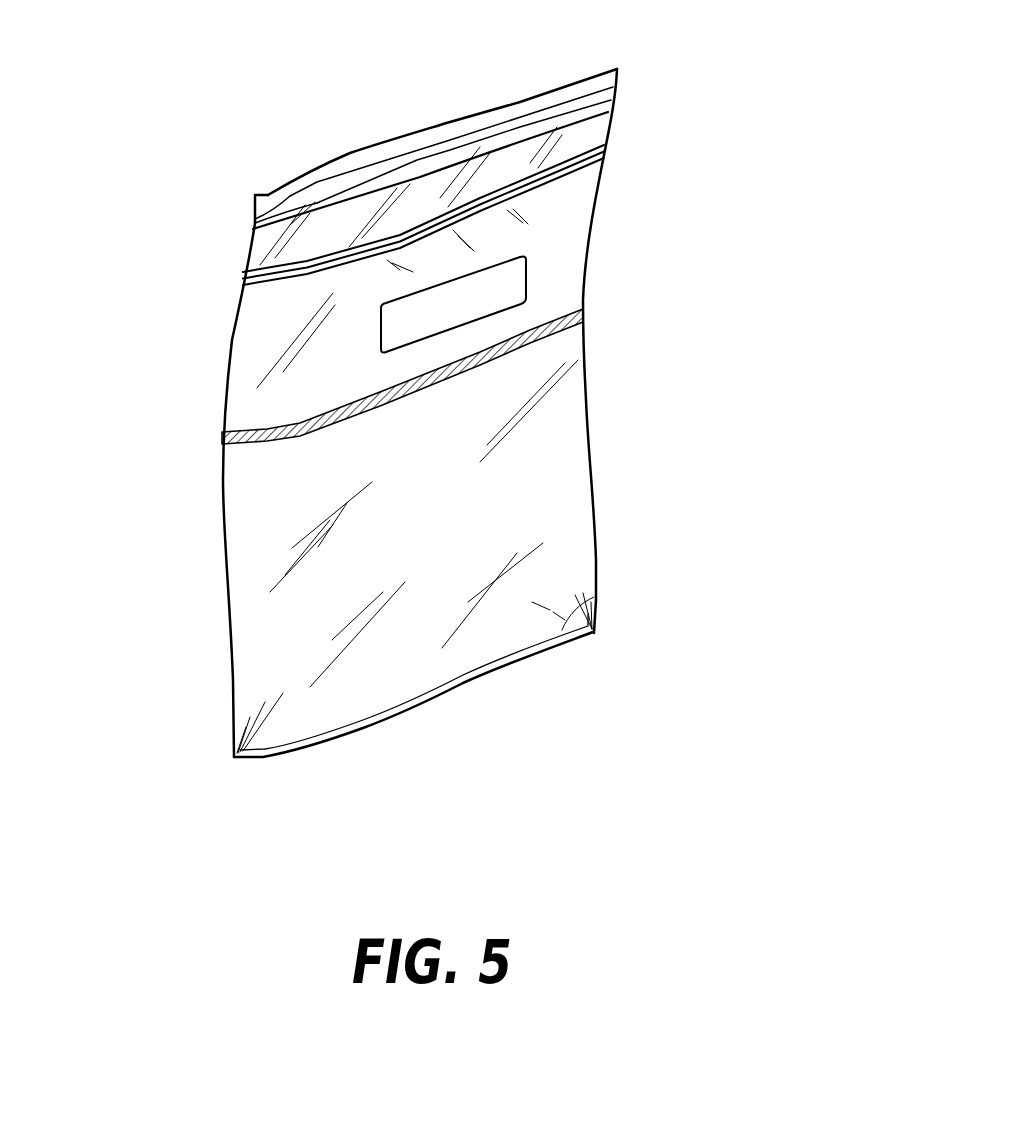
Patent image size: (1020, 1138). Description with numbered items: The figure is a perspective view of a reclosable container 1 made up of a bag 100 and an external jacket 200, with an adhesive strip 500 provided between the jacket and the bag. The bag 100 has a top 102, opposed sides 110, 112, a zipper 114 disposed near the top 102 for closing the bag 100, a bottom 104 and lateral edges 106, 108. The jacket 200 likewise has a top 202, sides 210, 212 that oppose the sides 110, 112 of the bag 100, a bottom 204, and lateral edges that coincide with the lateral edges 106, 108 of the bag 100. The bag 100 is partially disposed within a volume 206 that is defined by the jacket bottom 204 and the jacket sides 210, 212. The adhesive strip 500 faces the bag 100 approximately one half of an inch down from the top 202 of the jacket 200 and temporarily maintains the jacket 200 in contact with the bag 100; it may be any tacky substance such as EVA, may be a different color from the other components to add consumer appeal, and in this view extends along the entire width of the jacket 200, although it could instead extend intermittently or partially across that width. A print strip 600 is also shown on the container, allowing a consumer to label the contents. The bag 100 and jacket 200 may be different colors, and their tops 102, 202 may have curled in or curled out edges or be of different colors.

The container 1 is at (122, 380).
The bag 100 is at (547, 110).
The top 102 is at (592, 76).
The bottom 104 is at (598, 598).
The lateral edge 106 is at (584, 332).
The lateral edge 108 is at (230, 577).
The side 110 is at (253, 228).
The side 112 is at (364, 162).
The zipper 114 is at (608, 136).
The external jacket 200 is at (445, 529).
The top 202 is at (622, 77).
The bottom 204 is at (513, 666).
The volume 206 is at (456, 140).
The side 210 is at (567, 425).
The side 212 is at (301, 172).
The adhesive strip 500 is at (222, 445).
The print strip 600 is at (523, 284).